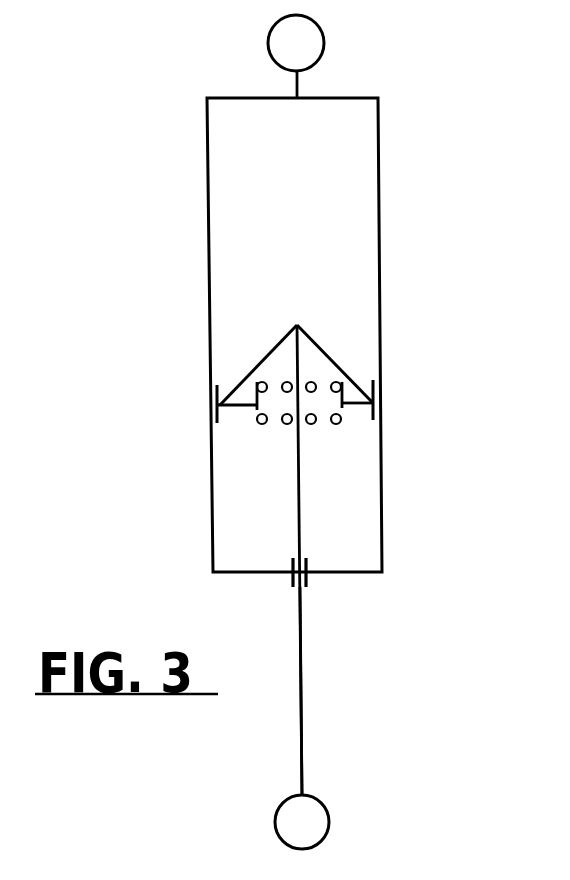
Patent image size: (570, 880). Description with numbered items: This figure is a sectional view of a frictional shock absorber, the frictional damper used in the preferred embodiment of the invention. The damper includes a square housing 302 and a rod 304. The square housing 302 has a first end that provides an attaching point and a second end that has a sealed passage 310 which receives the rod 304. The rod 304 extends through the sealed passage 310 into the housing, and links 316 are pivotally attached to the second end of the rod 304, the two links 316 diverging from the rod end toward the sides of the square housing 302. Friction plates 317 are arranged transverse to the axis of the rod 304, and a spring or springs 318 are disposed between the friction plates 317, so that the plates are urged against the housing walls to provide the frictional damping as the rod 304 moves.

The square housing 302 is at (380, 175).
The rod 304 is at (302, 675).
The sealed passage 310 is at (306, 580).
The links 316 is at (265, 358).
The friction plates 317 is at (217, 392).
The spring or springs 318 is at (315, 423).